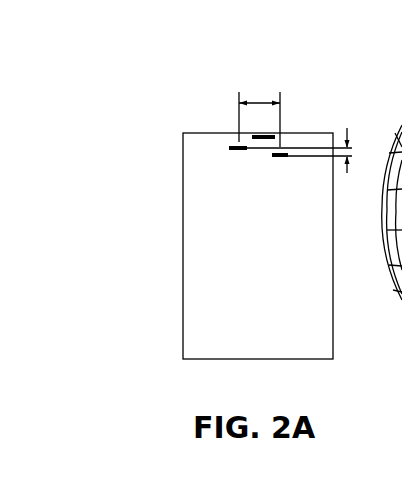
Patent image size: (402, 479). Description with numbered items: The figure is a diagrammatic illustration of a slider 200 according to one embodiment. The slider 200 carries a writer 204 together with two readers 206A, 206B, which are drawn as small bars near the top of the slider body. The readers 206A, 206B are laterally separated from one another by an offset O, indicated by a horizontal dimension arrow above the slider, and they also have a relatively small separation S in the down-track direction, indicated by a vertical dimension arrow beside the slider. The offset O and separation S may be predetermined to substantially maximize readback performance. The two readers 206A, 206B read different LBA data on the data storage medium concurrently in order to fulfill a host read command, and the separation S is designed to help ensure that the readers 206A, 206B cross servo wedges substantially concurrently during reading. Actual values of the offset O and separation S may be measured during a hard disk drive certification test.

The slider 200 is at (146, 123).
The writer 204 is at (278, 139).
The reader 206A is at (229, 148).
The reader 206B is at (283, 158).
The offset O is at (258, 103).
The separation S is at (352, 151).